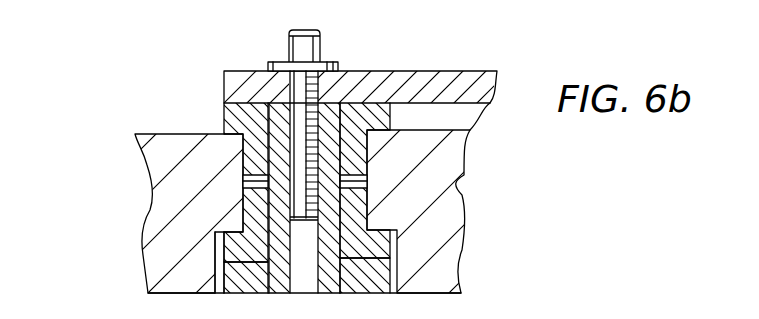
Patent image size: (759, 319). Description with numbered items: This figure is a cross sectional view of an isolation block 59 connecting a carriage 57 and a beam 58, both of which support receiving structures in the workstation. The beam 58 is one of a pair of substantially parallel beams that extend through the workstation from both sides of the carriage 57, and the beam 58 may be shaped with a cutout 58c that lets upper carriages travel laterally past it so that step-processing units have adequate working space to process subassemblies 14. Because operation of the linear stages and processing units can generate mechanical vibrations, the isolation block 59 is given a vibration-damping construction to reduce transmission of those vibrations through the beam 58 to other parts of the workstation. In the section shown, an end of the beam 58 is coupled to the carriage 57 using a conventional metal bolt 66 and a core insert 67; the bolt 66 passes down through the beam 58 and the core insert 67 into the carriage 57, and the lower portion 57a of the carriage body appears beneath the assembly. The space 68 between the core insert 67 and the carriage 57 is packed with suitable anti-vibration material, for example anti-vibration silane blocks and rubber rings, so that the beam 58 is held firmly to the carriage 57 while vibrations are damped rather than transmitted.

The carriage 57 is at (142, 153).
The lower portion of first housing body 57a is at (181, 275).
The beam 58 is at (241, 79).
The cutout 58c is at (232, 288).
The isolation block 59 is at (448, 37).
The metal bolt 66 is at (292, 48).
The core insert 67 is at (330, 110).
The space 68 is at (238, 124).
The subassembly 14 is at (378, 306).